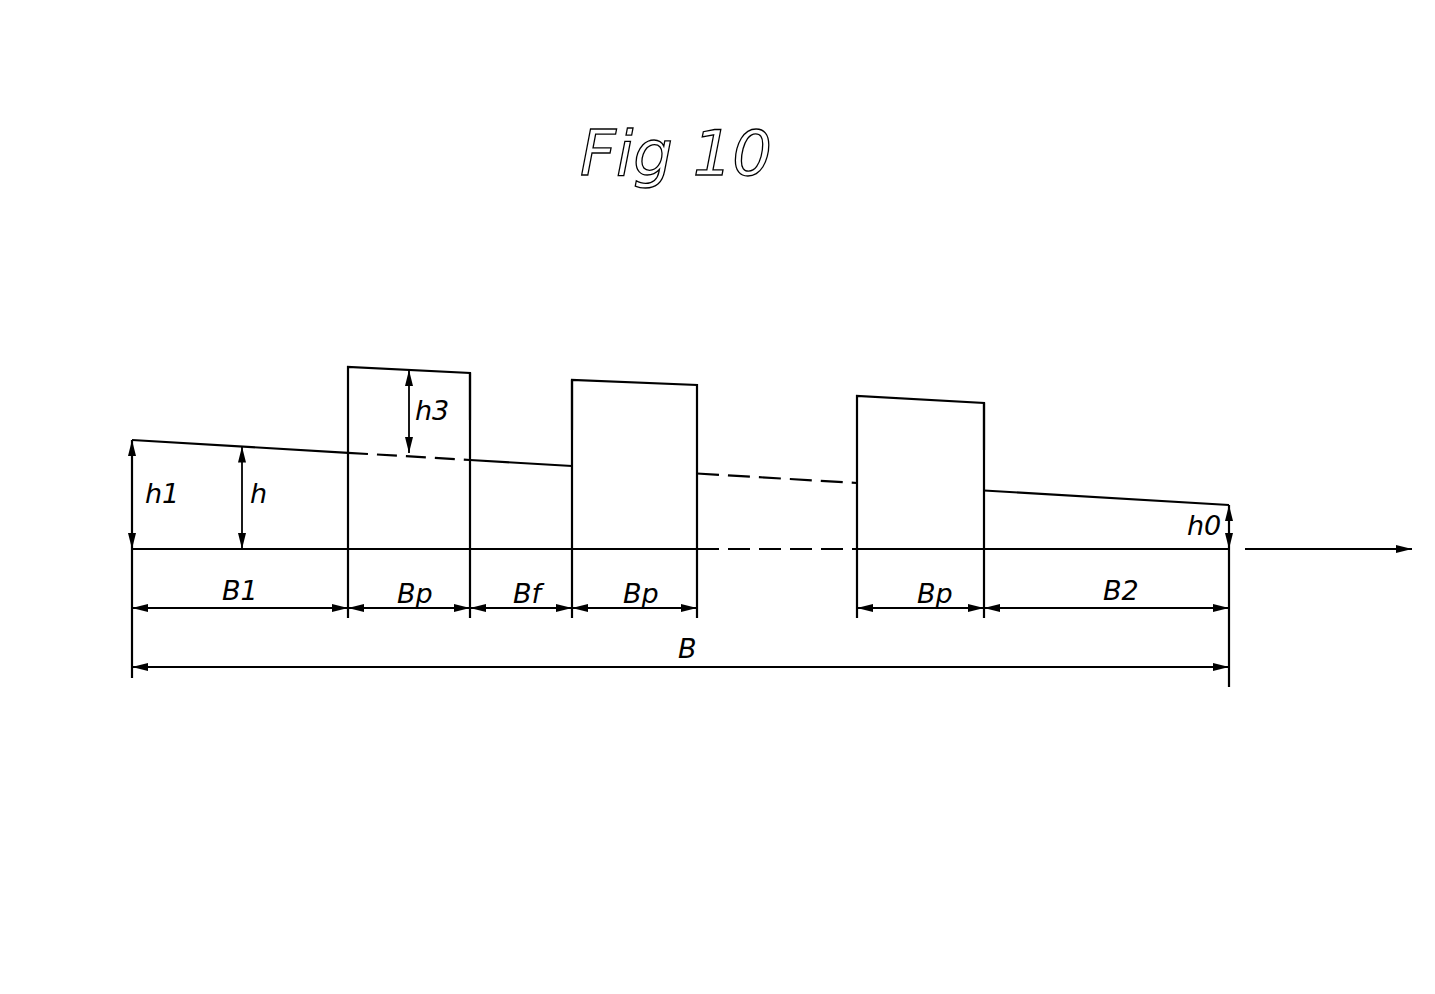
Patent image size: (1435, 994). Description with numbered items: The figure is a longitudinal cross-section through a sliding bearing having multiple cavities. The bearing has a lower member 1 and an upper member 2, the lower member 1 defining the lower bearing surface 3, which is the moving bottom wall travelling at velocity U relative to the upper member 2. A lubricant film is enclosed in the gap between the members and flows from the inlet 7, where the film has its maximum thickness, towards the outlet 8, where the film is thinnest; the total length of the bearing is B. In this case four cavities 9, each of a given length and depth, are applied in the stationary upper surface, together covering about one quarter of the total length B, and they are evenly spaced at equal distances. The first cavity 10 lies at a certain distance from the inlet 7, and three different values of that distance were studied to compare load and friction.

The lower member 1 is at (743, 513).
The upper member 2 is at (1095, 483).
The lower bearing surface 3 is at (213, 464).
The inlet 7 is at (132, 518).
The outlet 8 is at (1233, 527).
The cavity 9 is at (400, 368).
The first cavity 10 is at (585, 403).